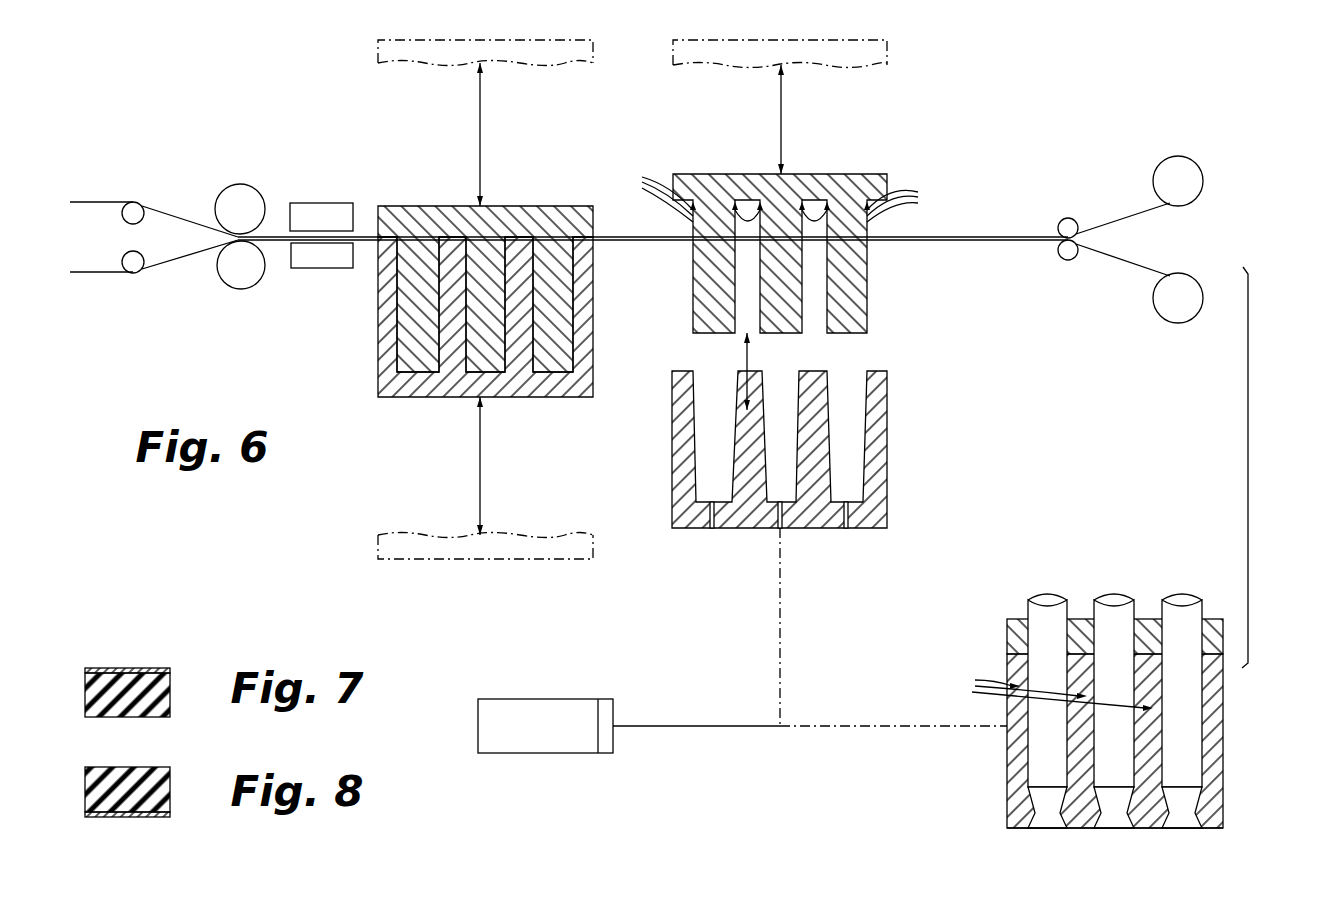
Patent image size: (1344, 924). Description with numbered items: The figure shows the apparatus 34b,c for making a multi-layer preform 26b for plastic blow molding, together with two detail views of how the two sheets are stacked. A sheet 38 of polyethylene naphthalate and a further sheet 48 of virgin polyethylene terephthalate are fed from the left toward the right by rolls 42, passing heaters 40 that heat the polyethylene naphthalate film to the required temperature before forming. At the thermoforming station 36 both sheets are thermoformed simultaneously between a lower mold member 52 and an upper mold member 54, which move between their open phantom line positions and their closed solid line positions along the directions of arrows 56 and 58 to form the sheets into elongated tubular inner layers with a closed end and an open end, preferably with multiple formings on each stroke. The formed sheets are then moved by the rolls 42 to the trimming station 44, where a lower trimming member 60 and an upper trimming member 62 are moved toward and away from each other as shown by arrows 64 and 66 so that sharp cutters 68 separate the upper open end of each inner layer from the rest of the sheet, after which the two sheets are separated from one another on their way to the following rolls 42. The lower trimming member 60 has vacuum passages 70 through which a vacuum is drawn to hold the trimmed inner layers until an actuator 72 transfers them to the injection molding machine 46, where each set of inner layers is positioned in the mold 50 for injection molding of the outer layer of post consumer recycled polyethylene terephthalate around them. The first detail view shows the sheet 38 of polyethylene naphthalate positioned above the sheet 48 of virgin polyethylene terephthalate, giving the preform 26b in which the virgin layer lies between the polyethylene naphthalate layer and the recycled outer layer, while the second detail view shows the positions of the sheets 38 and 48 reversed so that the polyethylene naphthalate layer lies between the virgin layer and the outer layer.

In FIG. 6, the preform 26b is at (1039, 689).
In FIG. 6, the apparatus 34b,c is at (1281, 467).
In FIG. 6, the thermoforming station 36 is at (589, 115).
In FIG. 6, the sheet of polyethylene naphthalate 38 is at (165, 208).
In FIG. 7, the sheet of polyethylene naphthalate 38 is at (92, 668).
In FIG. 8, the sheet of polyethylene naphthalate 38 is at (96, 817).
In FIG. 6, the heaters 40 is at (304, 208).
In FIG. 6, the rolls 42 is at (128, 218).
In FIG. 6, the trimming station 44 is at (869, 138).
In FIG. 6, the injection molding machine 46 is at (990, 774).
In FIG. 6, the sheet of virgin polyethylene terephthalate 48 is at (173, 260).
In FIG. 7, the sheet of virgin polyethylene terephthalate 48 is at (88, 690).
In FIG. 8, the sheet of virgin polyethylene terephthalate 48 is at (88, 790).
In FIG. 6, the mold 50 is at (1232, 731).
In FIG. 6, the lower mold member 52 is at (393, 397).
In FIG. 6, the upper mold member 54 is at (408, 205).
In FIG. 6, the arrow 56 is at (478, 465).
In FIG. 6, the arrow 58 is at (473, 138).
In FIG. 6, the lower trimming member 60 is at (888, 385).
In FIG. 6, the upper trimming member 62 is at (888, 180).
In FIG. 6, the arrow 64 is at (747, 347).
In FIG. 6, the arrow 66 is at (781, 118).
In FIG. 6, the sharp cutters 68 is at (780, 194).
In FIG. 6, the vacuum passages 70 is at (712, 528).
In FIG. 6, the actuator 72 is at (585, 753).